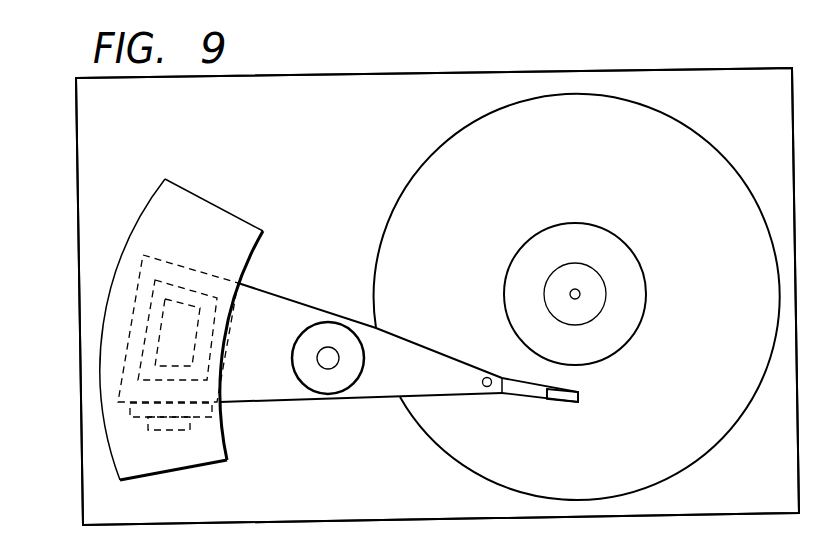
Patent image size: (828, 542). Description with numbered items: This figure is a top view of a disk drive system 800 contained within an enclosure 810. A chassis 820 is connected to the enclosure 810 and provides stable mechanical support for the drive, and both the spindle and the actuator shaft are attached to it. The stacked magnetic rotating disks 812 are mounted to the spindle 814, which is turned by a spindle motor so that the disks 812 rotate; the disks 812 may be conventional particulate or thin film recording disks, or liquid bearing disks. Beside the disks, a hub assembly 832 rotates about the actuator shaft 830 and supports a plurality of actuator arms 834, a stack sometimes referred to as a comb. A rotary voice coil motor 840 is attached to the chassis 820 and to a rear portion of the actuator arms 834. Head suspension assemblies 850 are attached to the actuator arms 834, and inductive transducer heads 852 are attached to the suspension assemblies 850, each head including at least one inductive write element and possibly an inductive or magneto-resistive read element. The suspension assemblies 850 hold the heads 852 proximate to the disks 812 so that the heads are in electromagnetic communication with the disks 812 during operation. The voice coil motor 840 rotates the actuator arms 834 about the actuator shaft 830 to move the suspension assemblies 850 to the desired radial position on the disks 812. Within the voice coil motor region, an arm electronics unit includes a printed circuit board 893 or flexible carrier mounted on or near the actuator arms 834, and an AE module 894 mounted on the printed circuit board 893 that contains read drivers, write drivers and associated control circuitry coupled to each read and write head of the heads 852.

The disk drive system 800 is at (716, 57).
The enclosure 810 is at (76, 190).
The magnetic rotating disks 812 is at (592, 169).
The spindle 814 is at (596, 269).
The chassis 820 is at (429, 285).
The actuator shaft 830 is at (317, 360).
The hub assembly 832 is at (328, 322).
The actuator arms 834 is at (373, 396).
The rotary voice coil motor 840 is at (213, 203).
The head suspension assemblies 850 is at (525, 397).
The inductive transducer heads 852 is at (579, 396).
The printed circuit board 893 is at (130, 407).
The AE module 894 is at (190, 422).